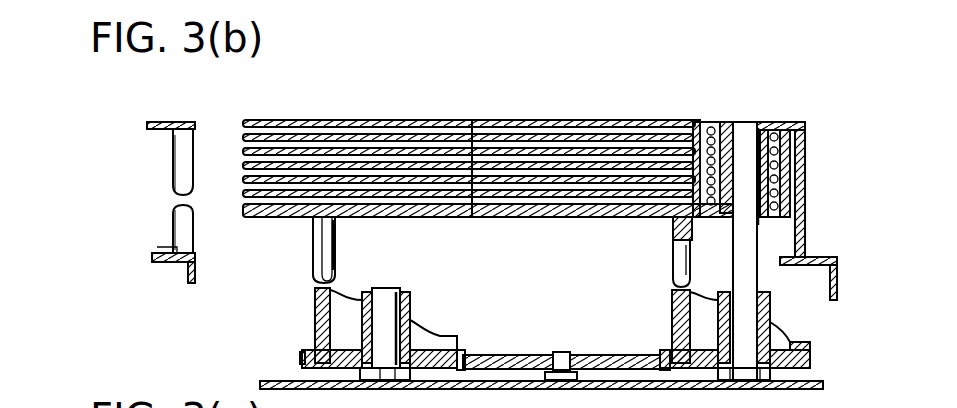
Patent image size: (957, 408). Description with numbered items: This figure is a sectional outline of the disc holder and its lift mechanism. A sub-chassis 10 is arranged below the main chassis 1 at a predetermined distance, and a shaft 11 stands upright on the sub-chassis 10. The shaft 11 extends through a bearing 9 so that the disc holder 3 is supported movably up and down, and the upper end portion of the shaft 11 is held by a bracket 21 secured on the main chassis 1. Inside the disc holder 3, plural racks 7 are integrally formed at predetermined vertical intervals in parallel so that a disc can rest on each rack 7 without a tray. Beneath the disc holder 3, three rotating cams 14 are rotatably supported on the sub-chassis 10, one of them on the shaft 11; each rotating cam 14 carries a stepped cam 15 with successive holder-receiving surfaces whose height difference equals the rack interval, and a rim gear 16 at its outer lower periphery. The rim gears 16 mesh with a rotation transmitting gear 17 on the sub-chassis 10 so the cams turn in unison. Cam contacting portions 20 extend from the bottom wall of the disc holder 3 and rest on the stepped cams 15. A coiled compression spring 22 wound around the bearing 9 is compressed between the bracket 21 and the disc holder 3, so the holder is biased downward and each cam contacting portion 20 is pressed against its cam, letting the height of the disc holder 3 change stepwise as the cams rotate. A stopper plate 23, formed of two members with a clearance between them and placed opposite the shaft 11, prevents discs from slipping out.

The main chassis 1 is at (165, 263).
The disc holder 3 is at (593, 119).
The rack 7 is at (403, 153).
The bearing 9 is at (762, 166).
The sub-chassis 10 is at (640, 390).
The shaft 11 is at (745, 120).
The rotating cam 14 is at (307, 311).
The stepped cam 15 is at (412, 330).
The rim gear 16 is at (300, 357).
The rotation transmitting gear 17 is at (507, 352).
The cam contacting portion 20 is at (313, 256).
The bracket 21 is at (780, 126).
The coiled compression spring 22 is at (710, 130).
The stopper plate 23 is at (172, 225).